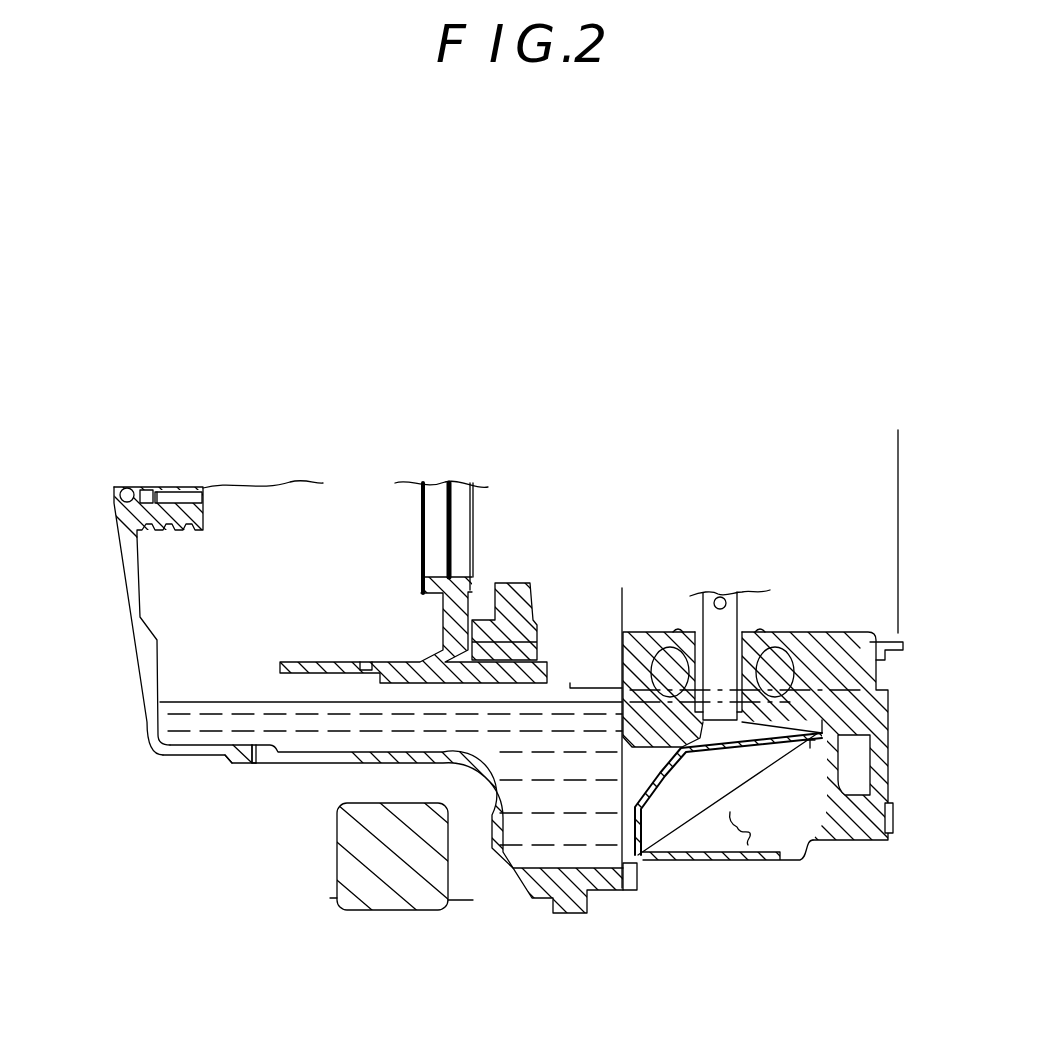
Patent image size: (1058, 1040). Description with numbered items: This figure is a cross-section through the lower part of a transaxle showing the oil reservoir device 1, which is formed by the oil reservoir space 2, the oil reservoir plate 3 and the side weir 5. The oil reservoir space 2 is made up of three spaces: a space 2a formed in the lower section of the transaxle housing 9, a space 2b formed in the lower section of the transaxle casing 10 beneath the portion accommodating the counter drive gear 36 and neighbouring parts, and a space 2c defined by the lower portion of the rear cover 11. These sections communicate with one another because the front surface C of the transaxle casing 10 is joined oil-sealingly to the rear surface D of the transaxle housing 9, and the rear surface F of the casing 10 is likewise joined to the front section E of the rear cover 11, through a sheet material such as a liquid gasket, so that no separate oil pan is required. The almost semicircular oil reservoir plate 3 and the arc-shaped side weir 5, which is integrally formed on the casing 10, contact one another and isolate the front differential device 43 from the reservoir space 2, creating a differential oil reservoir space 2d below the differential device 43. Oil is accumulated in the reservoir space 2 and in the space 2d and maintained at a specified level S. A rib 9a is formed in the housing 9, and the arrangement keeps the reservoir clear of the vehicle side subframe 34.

The oil reservoir device 1 is at (352, 443).
The oil reservoir space 2 is at (408, 733).
The space 2a is at (763, 773).
The space 2b is at (372, 732).
The space 2c is at (150, 725).
The differential oil reservoir space 2d is at (863, 742).
The oil reservoir plate 3 is at (670, 763).
The side weir 5 is at (593, 690).
The transaxle housing 9 is at (733, 810).
The rib 9a is at (760, 850).
The transaxle casing 10 is at (484, 848).
The rear cover 11 is at (122, 522).
The vehicle side subframe 34 is at (390, 876).
The counter drive gear 36 is at (520, 605).
The front differential device 43 is at (737, 594).
The specified oil level S is at (245, 705).
The front section of the rear cover E is at (230, 762).
The rear surface of the transaxle casing F is at (261, 765).
The front surface of the transaxle casing C is at (613, 892).
The rear surface of the transaxle housing D is at (638, 892).